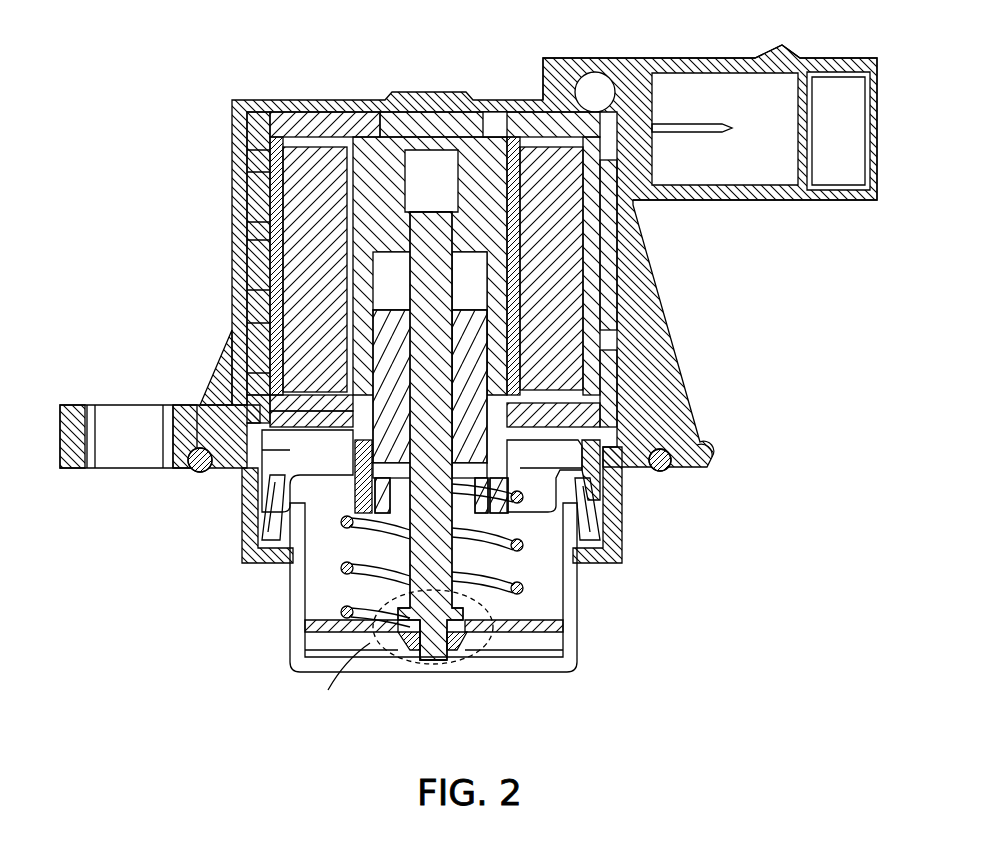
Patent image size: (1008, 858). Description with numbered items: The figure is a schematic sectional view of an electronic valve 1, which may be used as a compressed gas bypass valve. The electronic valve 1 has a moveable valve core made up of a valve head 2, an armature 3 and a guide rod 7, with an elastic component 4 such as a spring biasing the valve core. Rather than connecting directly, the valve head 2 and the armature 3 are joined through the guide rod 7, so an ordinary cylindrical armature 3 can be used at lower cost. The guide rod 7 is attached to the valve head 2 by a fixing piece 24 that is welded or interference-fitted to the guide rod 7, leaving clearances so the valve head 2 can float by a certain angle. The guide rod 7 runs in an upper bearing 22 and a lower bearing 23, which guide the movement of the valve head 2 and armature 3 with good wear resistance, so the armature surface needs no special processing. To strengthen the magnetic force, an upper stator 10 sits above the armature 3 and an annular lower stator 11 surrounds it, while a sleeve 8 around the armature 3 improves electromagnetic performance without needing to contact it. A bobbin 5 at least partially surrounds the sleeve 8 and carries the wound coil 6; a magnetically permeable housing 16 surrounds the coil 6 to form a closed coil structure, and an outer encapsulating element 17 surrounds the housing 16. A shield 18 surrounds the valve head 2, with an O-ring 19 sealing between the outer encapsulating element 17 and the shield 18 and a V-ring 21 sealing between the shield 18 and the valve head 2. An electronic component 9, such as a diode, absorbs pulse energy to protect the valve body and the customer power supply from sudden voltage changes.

The electronic valve 1 is at (148, 50).
The valve head 2 is at (510, 628).
The armature 3 is at (397, 412).
The elastic component 4 is at (520, 570).
The bobbin 5 is at (340, 165).
The coil 6 is at (320, 185).
The guide rod 7 is at (450, 640).
The sleeve 8 is at (363, 340).
The electronic component 9 is at (595, 92).
The upper stator 10 is at (410, 135).
The lower stator 11 is at (715, 453).
The housing 16 is at (257, 203).
The outer encapsulating element 17 is at (247, 265).
The shield 18 is at (618, 498).
The O-ring 19 is at (700, 468).
The V-ring 21 is at (605, 535).
The upper bearing 22 is at (520, 235).
The lower bearing 23 is at (282, 525).
The fixing piece 24 is at (425, 650).